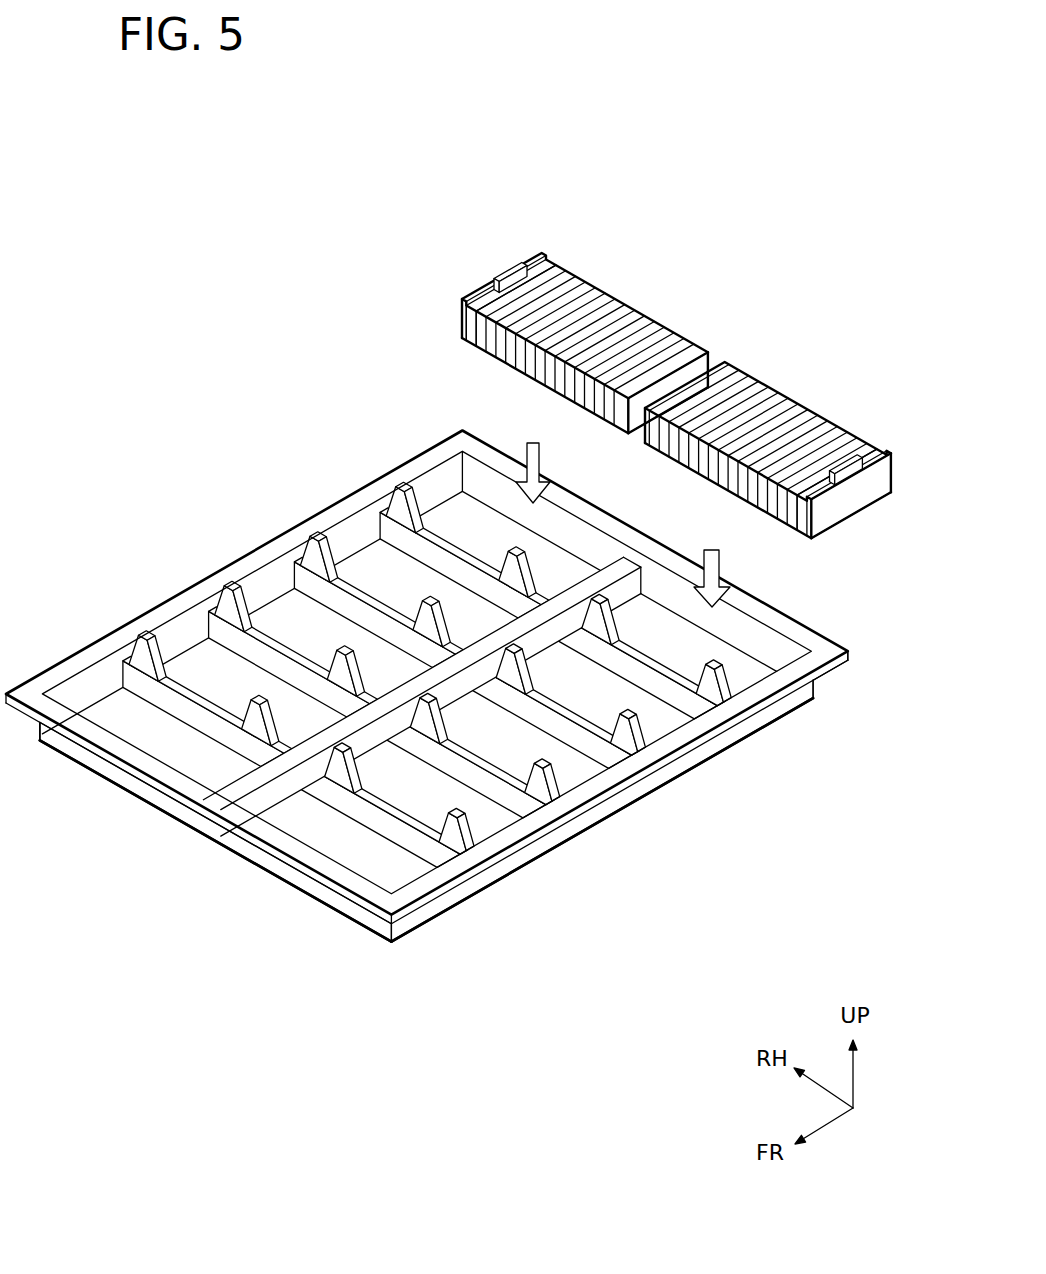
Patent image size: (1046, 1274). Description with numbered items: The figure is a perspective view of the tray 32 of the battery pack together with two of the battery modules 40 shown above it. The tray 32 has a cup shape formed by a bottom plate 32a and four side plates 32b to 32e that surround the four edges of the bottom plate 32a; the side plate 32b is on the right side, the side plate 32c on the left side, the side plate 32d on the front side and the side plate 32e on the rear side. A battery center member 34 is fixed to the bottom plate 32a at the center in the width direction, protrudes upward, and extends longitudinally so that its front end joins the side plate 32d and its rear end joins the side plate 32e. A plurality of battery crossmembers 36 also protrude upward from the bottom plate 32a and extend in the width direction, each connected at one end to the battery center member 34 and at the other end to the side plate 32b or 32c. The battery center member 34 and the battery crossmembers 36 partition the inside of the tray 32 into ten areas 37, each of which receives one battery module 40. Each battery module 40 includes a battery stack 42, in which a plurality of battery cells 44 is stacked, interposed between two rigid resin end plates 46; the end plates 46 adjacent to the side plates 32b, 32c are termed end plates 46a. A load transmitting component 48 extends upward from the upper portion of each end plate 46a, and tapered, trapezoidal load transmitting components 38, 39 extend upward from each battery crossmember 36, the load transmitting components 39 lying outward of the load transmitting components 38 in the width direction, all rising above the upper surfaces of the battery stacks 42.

The tray 32 is at (388, 978).
The bottom plate 32a is at (420, 902).
The side plate 32b is at (272, 570).
The side plate 32c is at (640, 790).
The side plate 32d is at (132, 780).
The side plate 32e is at (745, 632).
The battery center member 34 is at (245, 838).
The battery crossmember 36 is at (455, 613).
The area 37 is at (378, 856).
The load transmitting component 38 is at (442, 600).
The load transmitting component 39 is at (328, 553).
The battery module 40 is at (580, 208).
The battery stack 42 is at (540, 258).
The battery cell 44 is at (480, 347).
The end plate 46 is at (480, 292).
The end plate 46a is at (652, 427).
The load transmitting component 48 is at (513, 266).